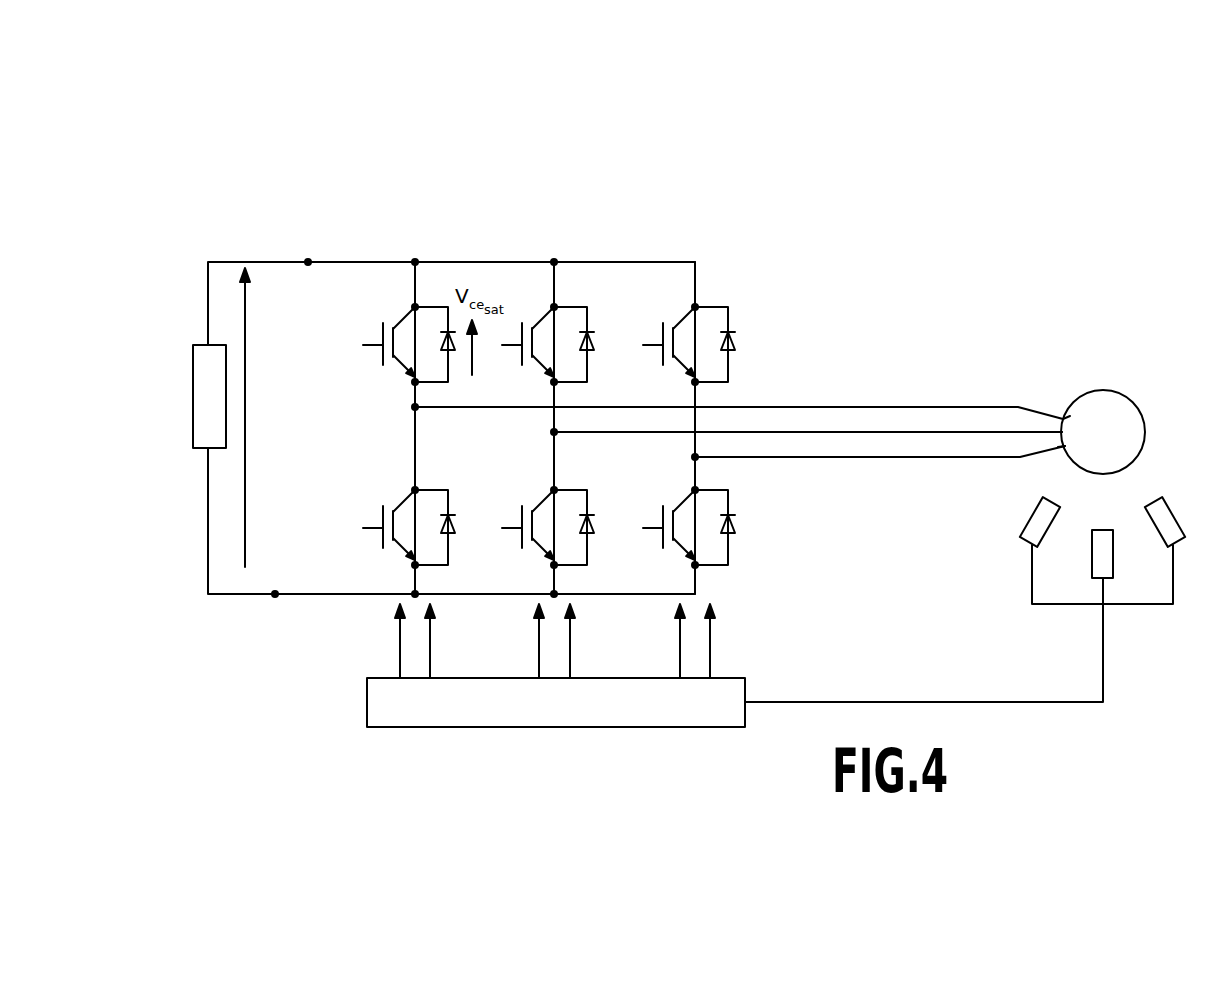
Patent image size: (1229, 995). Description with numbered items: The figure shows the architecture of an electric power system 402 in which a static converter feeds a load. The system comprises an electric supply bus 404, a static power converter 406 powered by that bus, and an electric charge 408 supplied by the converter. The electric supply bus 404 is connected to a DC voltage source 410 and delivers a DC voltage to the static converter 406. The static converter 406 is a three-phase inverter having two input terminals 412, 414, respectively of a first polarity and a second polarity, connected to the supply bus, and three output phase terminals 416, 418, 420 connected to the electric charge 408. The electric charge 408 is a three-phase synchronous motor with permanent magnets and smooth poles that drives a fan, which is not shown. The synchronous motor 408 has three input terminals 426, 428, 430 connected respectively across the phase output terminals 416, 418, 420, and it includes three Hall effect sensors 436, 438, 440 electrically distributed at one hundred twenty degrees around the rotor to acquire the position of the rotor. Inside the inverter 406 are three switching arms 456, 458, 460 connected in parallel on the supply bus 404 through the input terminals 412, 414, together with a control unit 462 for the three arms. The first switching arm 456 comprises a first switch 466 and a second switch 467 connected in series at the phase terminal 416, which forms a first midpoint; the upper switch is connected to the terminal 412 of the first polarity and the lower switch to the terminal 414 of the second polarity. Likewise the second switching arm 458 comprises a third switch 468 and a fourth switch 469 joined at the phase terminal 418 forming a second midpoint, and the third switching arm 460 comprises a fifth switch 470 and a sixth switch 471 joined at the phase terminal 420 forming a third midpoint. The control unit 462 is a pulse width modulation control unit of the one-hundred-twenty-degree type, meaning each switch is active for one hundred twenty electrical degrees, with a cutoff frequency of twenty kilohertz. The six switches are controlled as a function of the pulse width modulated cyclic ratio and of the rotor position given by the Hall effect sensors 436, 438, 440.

The electric power system 402 is at (253, 180).
The electric supply bus 404 is at (232, 262).
The static power converter 406 is at (485, 243).
The electric charge 408 is at (1101, 390).
The DC voltage source 410 is at (205, 403).
The input terminal with first polarity 412 is at (308, 262).
The input terminal with second polarity 414 is at (275, 594).
The output phase terminal 416 is at (415, 407).
The output phase terminal 418 is at (554, 432).
The output phase terminal 420 is at (700, 460).
The motor input terminal 426 is at (1062, 413).
The motor input terminal 428 is at (1060, 430).
The motor input terminal 430 is at (1062, 455).
The Hall effect sensor 436 is at (1040, 523).
The Hall effect sensor 438 is at (1107, 552).
The Hall effect sensor 440 is at (1180, 503).
The first switching arm 456 is at (370, 408).
The second switching arm 458 is at (500, 452).
The third switching arm 460 is at (648, 444).
The control unit 462 is at (512, 700).
The first switch 466 is at (407, 312).
The second switch 467 is at (407, 510).
The third switch 468 is at (535, 318).
The fourth switch 469 is at (537, 507).
The fifth switch 470 is at (676, 318).
The sixth switch 471 is at (695, 535).